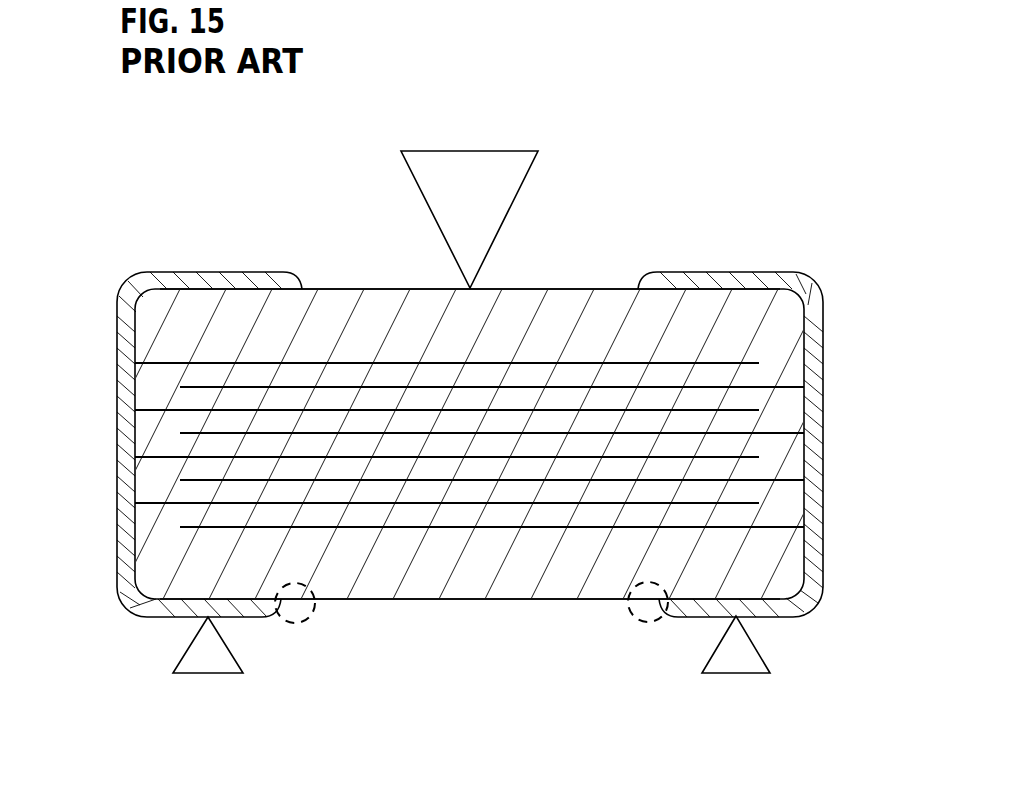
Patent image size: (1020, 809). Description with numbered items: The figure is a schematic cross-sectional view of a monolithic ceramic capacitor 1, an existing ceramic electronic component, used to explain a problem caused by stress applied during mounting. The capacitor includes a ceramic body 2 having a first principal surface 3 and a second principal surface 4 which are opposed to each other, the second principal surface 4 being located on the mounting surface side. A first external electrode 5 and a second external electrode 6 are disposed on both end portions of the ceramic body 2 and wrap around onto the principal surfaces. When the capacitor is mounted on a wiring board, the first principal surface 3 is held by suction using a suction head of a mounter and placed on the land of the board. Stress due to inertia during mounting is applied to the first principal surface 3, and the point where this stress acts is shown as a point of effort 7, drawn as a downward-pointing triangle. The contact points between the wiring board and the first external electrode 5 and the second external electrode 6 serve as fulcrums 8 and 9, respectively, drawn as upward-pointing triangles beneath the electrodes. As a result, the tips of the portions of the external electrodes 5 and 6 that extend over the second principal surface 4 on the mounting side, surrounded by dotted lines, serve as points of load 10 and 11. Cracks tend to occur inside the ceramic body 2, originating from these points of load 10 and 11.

The monolithic ceramic capacitor 1 is at (222, 142).
The ceramic body 2 is at (604, 282).
The first principal surface 3 is at (347, 288).
The second principal surface 4 is at (463, 600).
The first external electrode 5 is at (117, 330).
The second external electrode 6 is at (823, 333).
The point of effort 7 is at (510, 151).
The fulcrum 8 is at (183, 673).
The fulcrum 9 is at (753, 673).
The point of load 10 is at (289, 624).
The point of load 11 is at (636, 623).